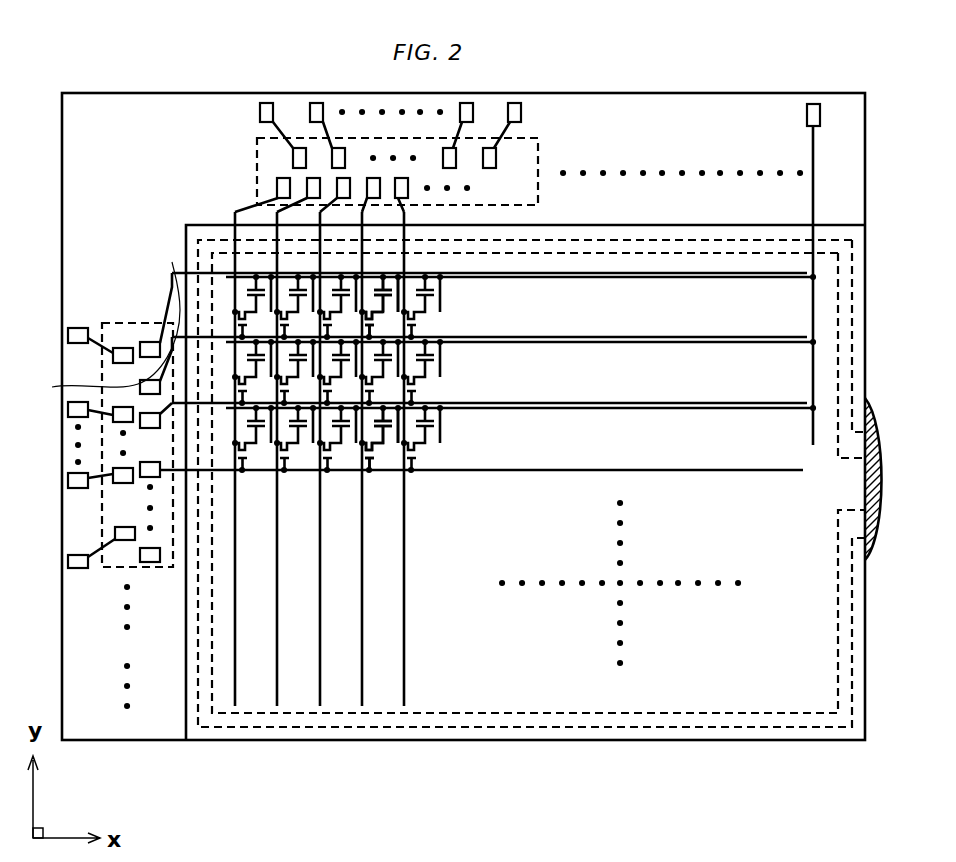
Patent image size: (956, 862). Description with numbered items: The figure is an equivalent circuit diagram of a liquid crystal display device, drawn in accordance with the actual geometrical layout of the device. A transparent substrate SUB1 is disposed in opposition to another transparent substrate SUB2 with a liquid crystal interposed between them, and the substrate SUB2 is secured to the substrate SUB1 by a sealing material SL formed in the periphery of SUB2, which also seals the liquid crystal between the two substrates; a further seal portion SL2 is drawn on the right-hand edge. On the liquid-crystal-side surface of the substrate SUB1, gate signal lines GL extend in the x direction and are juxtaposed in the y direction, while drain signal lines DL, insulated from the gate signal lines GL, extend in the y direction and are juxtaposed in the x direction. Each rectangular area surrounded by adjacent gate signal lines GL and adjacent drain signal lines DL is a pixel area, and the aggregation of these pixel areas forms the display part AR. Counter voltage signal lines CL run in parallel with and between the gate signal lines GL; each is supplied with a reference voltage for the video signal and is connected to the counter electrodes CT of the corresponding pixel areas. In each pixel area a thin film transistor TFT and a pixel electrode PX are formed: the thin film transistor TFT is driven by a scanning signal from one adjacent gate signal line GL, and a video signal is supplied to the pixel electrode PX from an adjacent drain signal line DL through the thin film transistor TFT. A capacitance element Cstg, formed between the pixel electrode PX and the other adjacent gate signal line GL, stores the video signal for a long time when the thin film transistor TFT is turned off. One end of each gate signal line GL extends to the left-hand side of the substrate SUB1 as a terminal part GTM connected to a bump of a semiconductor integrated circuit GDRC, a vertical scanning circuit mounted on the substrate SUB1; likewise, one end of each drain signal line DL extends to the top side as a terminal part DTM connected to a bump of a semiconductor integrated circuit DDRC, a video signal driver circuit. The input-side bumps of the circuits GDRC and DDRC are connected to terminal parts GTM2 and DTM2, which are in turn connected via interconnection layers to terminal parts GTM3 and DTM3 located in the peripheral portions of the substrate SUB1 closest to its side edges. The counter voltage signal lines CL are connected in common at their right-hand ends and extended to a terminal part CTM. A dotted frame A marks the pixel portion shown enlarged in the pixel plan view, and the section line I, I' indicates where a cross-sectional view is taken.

The transparent substrate SUB1 is at (107, 742).
The transparent substrate SUB2 is at (187, 732).
The sealing material SL is at (380, 718).
The sealing material (fill port) SL2 is at (865, 487).
The semiconductor integrated circuit DDRC is at (540, 151).
The terminal part DTM3 is at (260, 113).
The terminal part DTM2 is at (293, 157).
The terminal part DTM is at (277, 188).
The drain signal line DL is at (236, 694).
The terminal part CTM is at (812, 102).
The counter voltage signal line CL is at (762, 280).
The gate signal line GL is at (777, 470).
The semiconductor integrated circuit GDRC is at (113, 570).
The terminal part GTM is at (158, 342).
The terminal part GTM2 is at (126, 348).
The terminal part GTM3 is at (80, 327).
The line I— I is at (107, 355).
The section line I' is at (171, 271).
The pixel electrode PX is at (378, 370).
The capacitance element Cstg is at (392, 292).
The counter electrode CT is at (398, 303).
The thin film transistor TFT is at (380, 325).
The dotted frame A is at (412, 438).
The display part AR is at (597, 647).